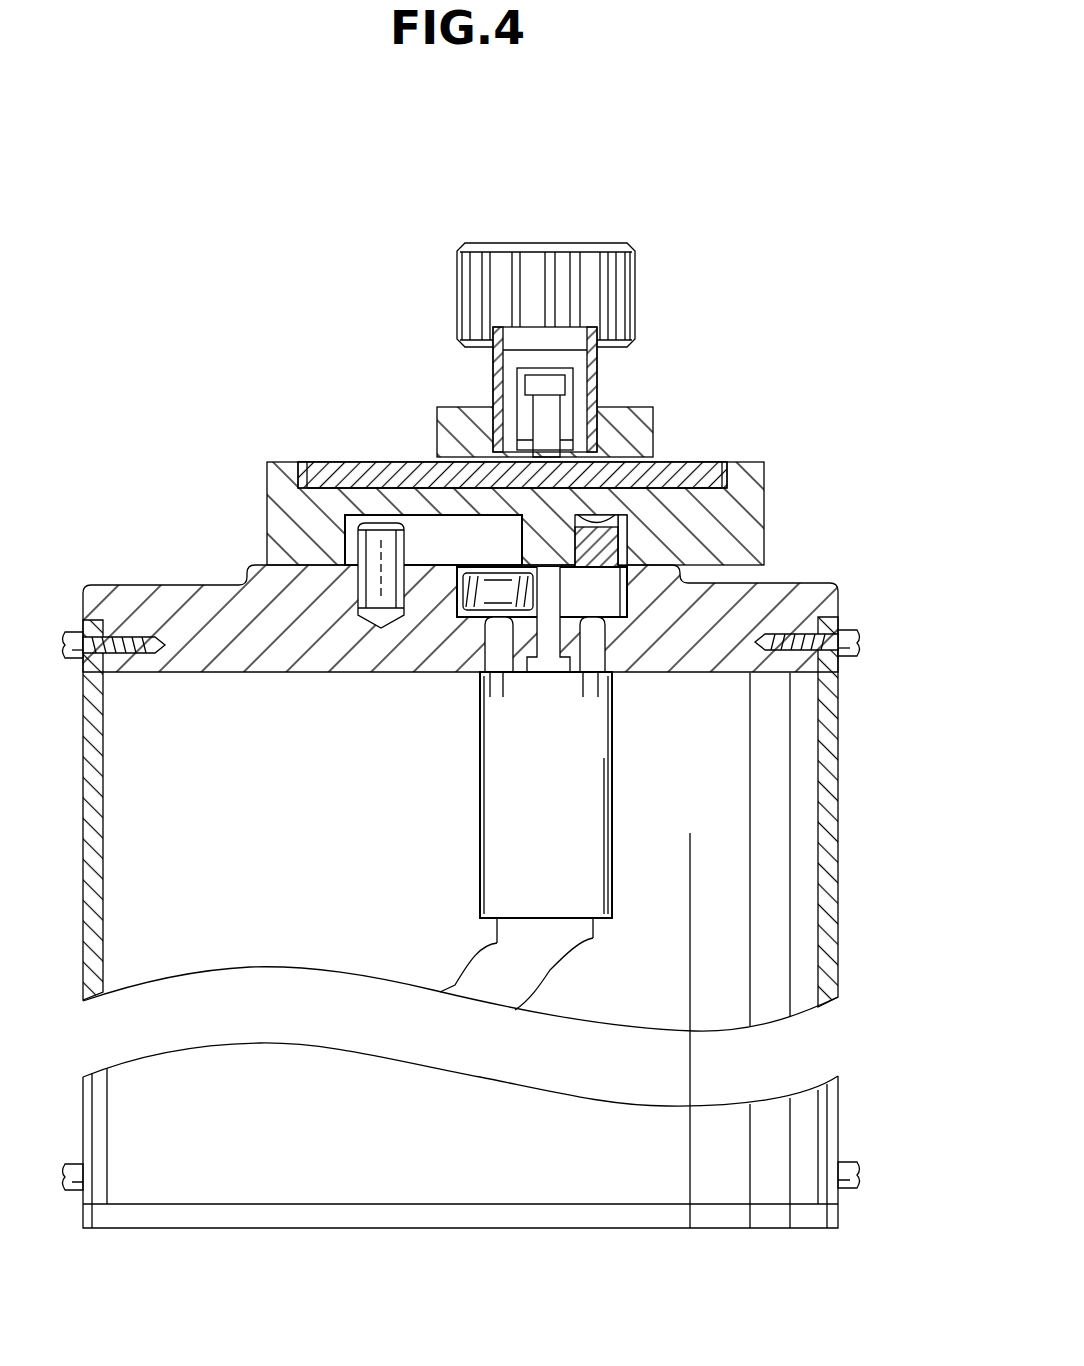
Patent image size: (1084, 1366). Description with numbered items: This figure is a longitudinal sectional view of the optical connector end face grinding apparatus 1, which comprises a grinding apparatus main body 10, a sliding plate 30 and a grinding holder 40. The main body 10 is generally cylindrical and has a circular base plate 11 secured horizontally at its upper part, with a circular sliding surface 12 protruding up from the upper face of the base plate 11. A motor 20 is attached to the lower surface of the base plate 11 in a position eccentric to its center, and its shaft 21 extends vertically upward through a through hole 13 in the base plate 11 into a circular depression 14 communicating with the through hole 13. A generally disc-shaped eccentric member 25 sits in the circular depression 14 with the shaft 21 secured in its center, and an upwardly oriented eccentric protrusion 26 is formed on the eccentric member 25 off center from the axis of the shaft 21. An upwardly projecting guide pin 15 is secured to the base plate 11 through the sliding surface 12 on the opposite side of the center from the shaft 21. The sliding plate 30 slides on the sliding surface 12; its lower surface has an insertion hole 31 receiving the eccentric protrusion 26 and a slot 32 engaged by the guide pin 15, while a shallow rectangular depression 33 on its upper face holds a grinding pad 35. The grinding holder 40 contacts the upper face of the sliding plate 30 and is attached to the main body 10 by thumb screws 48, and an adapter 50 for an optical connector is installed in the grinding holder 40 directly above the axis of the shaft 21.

The optical connector end face grinding apparatus 1 is at (739, 194).
The grinding apparatus main body 10 is at (848, 1116).
The base plate 11 is at (820, 598).
The sliding surface 12 is at (250, 565).
The through hole 13 is at (482, 640).
The circular depression 14 is at (455, 590).
The guide pin 15 is at (365, 592).
The motor 20 is at (597, 827).
The shaft 21 is at (555, 637).
The eccentric member 25 is at (630, 595).
The eccentric protrusion 26 is at (605, 538).
The sliding plate 30 is at (772, 507).
The insertion hole 31 is at (600, 520).
The slot 32 is at (430, 535).
The rectangular depression 33 is at (365, 475).
The grinding pad 35 is at (325, 468).
The grinding holder 40 is at (662, 414).
The thumb screws 48 is at (560, 262).
The adapter 50 is at (610, 380).